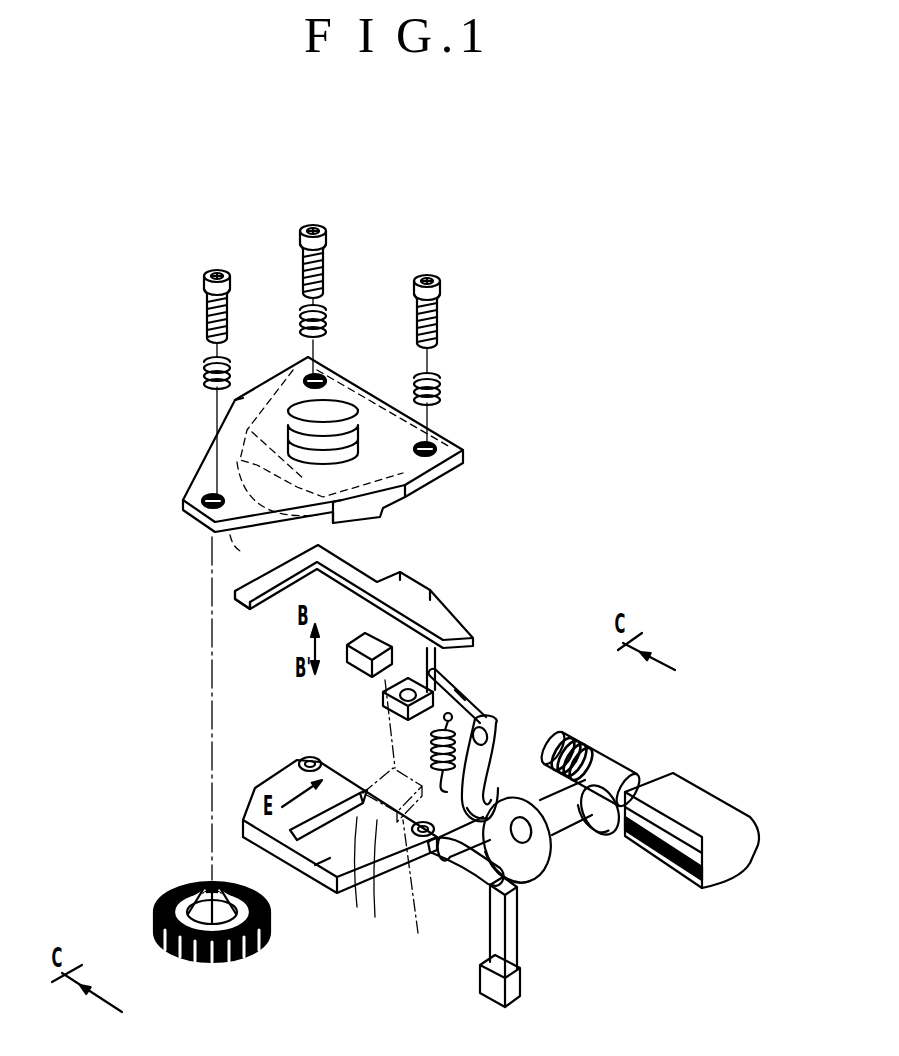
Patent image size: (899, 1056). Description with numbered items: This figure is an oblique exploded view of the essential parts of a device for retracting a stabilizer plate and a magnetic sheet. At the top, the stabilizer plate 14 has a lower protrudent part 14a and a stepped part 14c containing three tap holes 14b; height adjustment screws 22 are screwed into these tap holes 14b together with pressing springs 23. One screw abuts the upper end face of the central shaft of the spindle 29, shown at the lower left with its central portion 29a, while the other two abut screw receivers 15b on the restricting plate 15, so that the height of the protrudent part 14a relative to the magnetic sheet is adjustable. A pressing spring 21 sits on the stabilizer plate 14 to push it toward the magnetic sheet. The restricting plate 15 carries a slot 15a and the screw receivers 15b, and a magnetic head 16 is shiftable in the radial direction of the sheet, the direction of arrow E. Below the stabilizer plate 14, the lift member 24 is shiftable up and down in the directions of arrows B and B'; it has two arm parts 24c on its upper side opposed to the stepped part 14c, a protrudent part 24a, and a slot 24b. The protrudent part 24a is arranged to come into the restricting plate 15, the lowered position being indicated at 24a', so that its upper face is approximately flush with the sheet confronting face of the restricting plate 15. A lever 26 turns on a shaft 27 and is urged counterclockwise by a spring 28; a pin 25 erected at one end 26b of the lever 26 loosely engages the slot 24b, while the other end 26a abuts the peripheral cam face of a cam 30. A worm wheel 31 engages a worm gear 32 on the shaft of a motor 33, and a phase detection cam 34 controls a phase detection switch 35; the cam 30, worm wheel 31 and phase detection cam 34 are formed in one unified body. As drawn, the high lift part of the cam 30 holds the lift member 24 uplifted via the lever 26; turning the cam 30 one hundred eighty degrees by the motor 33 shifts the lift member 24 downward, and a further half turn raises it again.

The stabilizer plate 14 is at (218, 460).
The lower protrudent part 14a is at (236, 538).
The tap holes 14b is at (305, 378).
The stepped part 14c is at (245, 400).
The restricting plate 15 is at (388, 895).
The slot in base 15a is at (358, 890).
The screw receivers 15b is at (300, 764).
The magnetic head 16 is at (325, 868).
The pressing spring 21 is at (345, 407).
The height adjustment screws 22 is at (205, 290).
The pressing springs 23 is at (203, 377).
The lift member 24 is at (410, 583).
The protrudent part 24a is at (347, 700).
The projection position 24a' is at (400, 865).
The slot 24b is at (403, 713).
The arm parts 24c is at (263, 605).
The pin 25 is at (433, 690).
The lever 26 is at (485, 717).
The other end of lever 26a is at (492, 805).
The one end of lever 26b is at (452, 693).
The shaft 27 is at (487, 735).
The spring 28 is at (432, 752).
The spindle 29 is at (212, 943).
The projection of knob 29a is at (205, 878).
The cam 30 is at (536, 878).
The worm wheel 31 is at (585, 830).
The worm gear 32 is at (607, 765).
The motor 33 is at (710, 800).
The phase detection cam 34 is at (465, 888).
The phase detection switch 35 is at (512, 945).